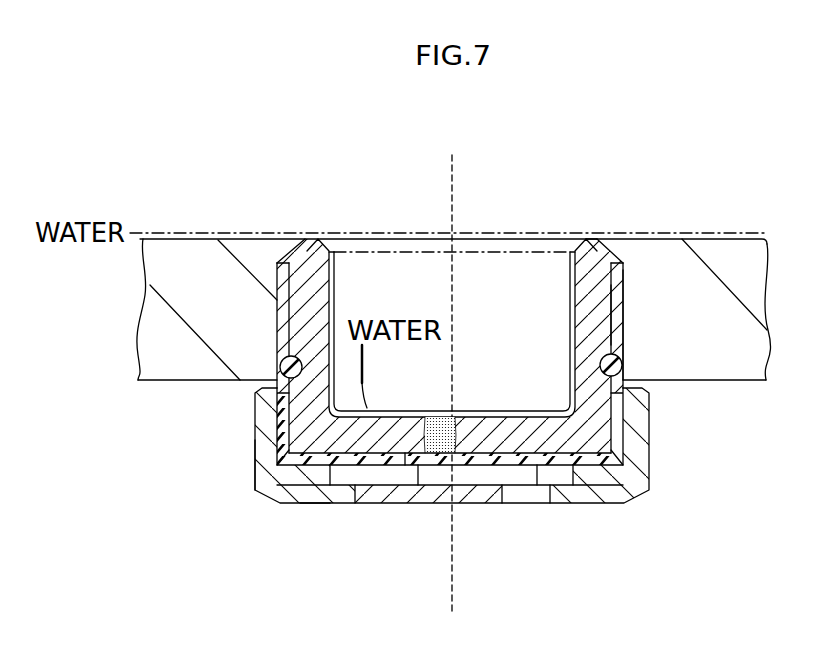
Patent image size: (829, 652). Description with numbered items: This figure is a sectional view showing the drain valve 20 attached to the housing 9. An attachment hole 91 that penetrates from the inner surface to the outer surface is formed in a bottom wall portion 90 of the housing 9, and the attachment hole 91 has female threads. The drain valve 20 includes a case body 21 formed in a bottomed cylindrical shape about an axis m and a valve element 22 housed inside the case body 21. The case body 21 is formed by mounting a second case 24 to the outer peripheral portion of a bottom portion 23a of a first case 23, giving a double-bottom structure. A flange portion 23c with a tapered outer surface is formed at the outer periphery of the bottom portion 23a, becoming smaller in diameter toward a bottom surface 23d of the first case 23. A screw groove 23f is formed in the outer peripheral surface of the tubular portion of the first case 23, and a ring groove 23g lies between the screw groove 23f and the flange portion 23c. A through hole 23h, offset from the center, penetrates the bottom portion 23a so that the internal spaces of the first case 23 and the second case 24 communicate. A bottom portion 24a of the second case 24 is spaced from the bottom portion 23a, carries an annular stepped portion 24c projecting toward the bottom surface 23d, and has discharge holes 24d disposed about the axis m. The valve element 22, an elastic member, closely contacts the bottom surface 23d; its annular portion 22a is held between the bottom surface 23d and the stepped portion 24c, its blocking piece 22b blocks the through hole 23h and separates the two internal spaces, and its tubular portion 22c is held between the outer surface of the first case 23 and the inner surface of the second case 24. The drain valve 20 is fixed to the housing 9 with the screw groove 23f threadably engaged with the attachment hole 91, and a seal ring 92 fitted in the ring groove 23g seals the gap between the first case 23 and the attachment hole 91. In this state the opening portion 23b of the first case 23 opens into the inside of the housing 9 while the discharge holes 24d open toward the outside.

The housing 9 is at (739, 237).
The bottom wall portion 90 is at (665, 238).
The attachment hole 91 is at (620, 272).
The seal ring 92 is at (623, 358).
The drain valve 20 is at (612, 220).
The case body 21 is at (355, 240).
The valve element 22 is at (420, 468).
The annular portion 22a is at (309, 502).
The blocking piece 22b is at (418, 487).
The tubular portion 22c is at (254, 457).
The first case 23 is at (284, 247).
The bottom portion 23a is at (502, 412).
The opening portion 23b is at (575, 240).
The flange portion 23c is at (650, 405).
The bottom surface 23d is at (539, 470).
The screw groove 23f is at (624, 300).
The ring groove 23g is at (613, 293).
The through hole 23h is at (428, 412).
The second case 24 is at (256, 396).
The bottom portion 24a is at (478, 462).
The stepped portion 24c is at (571, 468).
The discharge holes 24d is at (518, 482).
The axis m is at (452, 176).